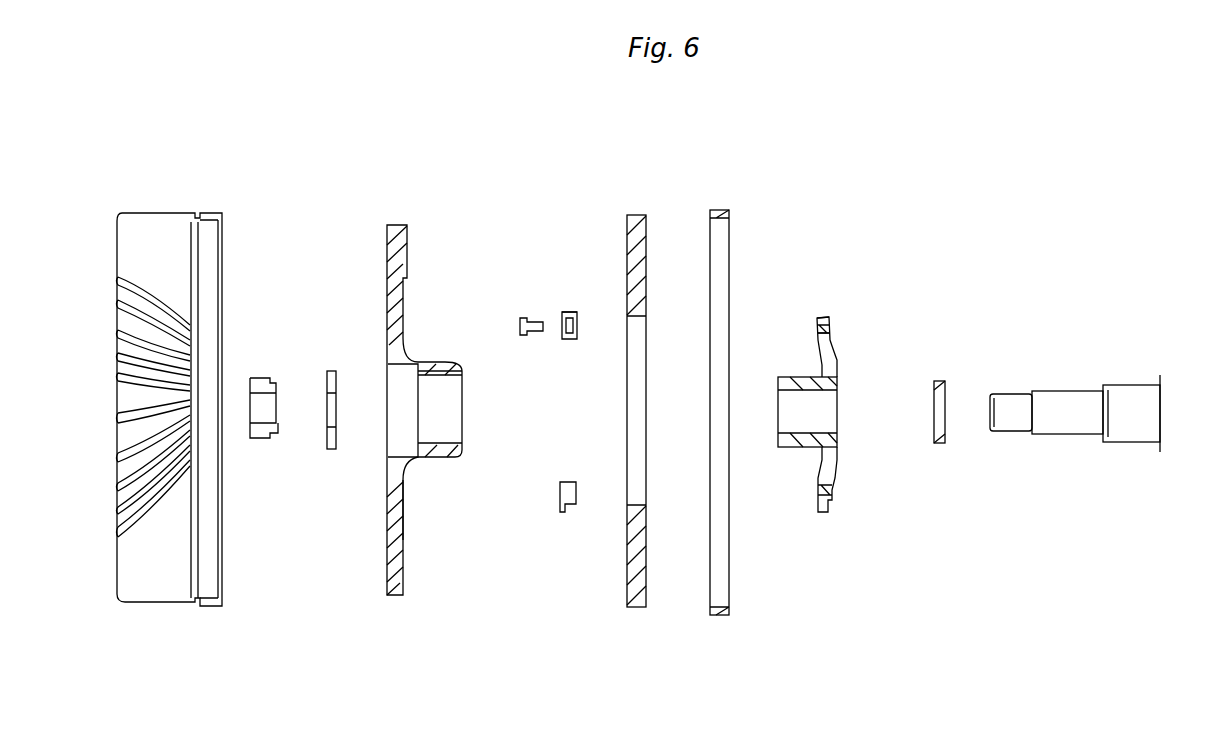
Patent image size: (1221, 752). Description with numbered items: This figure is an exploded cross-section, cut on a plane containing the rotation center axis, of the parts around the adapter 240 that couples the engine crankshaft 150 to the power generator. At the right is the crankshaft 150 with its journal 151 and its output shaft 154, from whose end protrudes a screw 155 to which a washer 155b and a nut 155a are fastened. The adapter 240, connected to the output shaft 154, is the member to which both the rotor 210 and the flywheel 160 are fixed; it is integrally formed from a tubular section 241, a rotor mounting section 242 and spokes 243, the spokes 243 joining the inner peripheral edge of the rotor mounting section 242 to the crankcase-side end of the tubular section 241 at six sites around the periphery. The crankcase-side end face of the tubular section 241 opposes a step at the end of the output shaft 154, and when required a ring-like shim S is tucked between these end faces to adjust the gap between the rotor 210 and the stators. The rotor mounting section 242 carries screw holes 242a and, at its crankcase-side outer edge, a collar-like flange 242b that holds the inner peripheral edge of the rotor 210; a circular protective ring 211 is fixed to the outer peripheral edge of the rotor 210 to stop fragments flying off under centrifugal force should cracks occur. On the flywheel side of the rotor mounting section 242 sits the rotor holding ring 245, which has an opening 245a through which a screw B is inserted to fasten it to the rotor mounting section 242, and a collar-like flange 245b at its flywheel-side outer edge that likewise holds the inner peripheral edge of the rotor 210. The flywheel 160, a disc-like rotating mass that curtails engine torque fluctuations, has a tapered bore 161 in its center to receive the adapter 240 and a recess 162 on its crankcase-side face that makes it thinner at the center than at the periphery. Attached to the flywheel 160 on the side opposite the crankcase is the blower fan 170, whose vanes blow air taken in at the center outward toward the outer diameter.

The blower fan 170 is at (194, 213).
The nut 155a is at (262, 379).
The washer 155b is at (332, 372).
The flywheel 160 is at (386, 238).
The tapered bore 161 is at (438, 378).
The recess 162 is at (400, 503).
The screw B is at (525, 319).
The rotor holding ring 245 is at (573, 317).
The opening 245a is at (568, 332).
The flange 245b is at (563, 313).
The rotor 210 is at (632, 215).
The protective ring 211 is at (720, 210).
The adapter 240 is at (837, 334).
The tubular section 241 is at (797, 379).
The rotor mounting section 242 is at (818, 317).
The screw holes 242a is at (829, 332).
The flange 242b is at (828, 315).
The spokes 243 is at (829, 354).
The shim S is at (941, 444).
The crankshaft 150 is at (1098, 394).
The journal 151 is at (1135, 443).
The output shaft 154 is at (1065, 434).
The screw 155 is at (1009, 431).